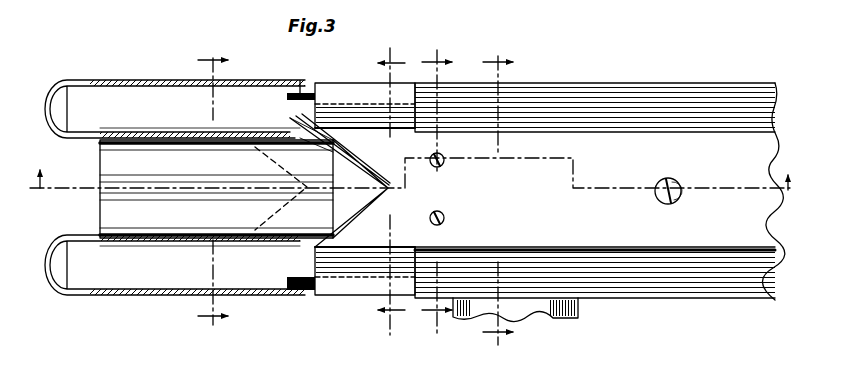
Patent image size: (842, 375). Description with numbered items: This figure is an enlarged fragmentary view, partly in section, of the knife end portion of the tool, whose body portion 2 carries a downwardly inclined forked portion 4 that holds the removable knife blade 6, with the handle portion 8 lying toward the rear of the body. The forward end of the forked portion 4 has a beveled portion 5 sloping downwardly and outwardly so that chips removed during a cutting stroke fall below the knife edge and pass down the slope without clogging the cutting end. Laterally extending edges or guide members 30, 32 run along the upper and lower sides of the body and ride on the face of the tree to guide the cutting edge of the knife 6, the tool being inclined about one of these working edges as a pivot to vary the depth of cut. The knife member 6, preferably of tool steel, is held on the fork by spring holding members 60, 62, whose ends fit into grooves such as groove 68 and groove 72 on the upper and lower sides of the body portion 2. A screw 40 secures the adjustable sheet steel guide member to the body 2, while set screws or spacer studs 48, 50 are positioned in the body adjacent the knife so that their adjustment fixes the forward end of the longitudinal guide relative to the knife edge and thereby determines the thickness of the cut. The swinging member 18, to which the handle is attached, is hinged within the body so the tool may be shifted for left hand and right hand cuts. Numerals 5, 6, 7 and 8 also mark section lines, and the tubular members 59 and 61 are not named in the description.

The body portion 2 is at (748, 298).
The forked portion 4 is at (412, 189).
The beveled portion 5 is at (362, 224).
The knife blade 6 is at (110, 214).
The section line 7- 7 is at (498, 200).
The handle portion 8 is at (437, 188).
The swinging member 18 is at (565, 320).
The guide member 30 is at (614, 92).
The guide member 32 is at (642, 298).
The screw 40 is at (680, 199).
The spacer stud 48 is at (445, 219).
The spacer stud 50 is at (446, 165).
The upper tube 59 is at (172, 92).
The spring holding member 60 is at (344, 88).
The lower tube 61 is at (170, 300).
The spring holding member 62 is at (342, 280).
The groove 68 is at (396, 246).
The groove 72 is at (384, 130).